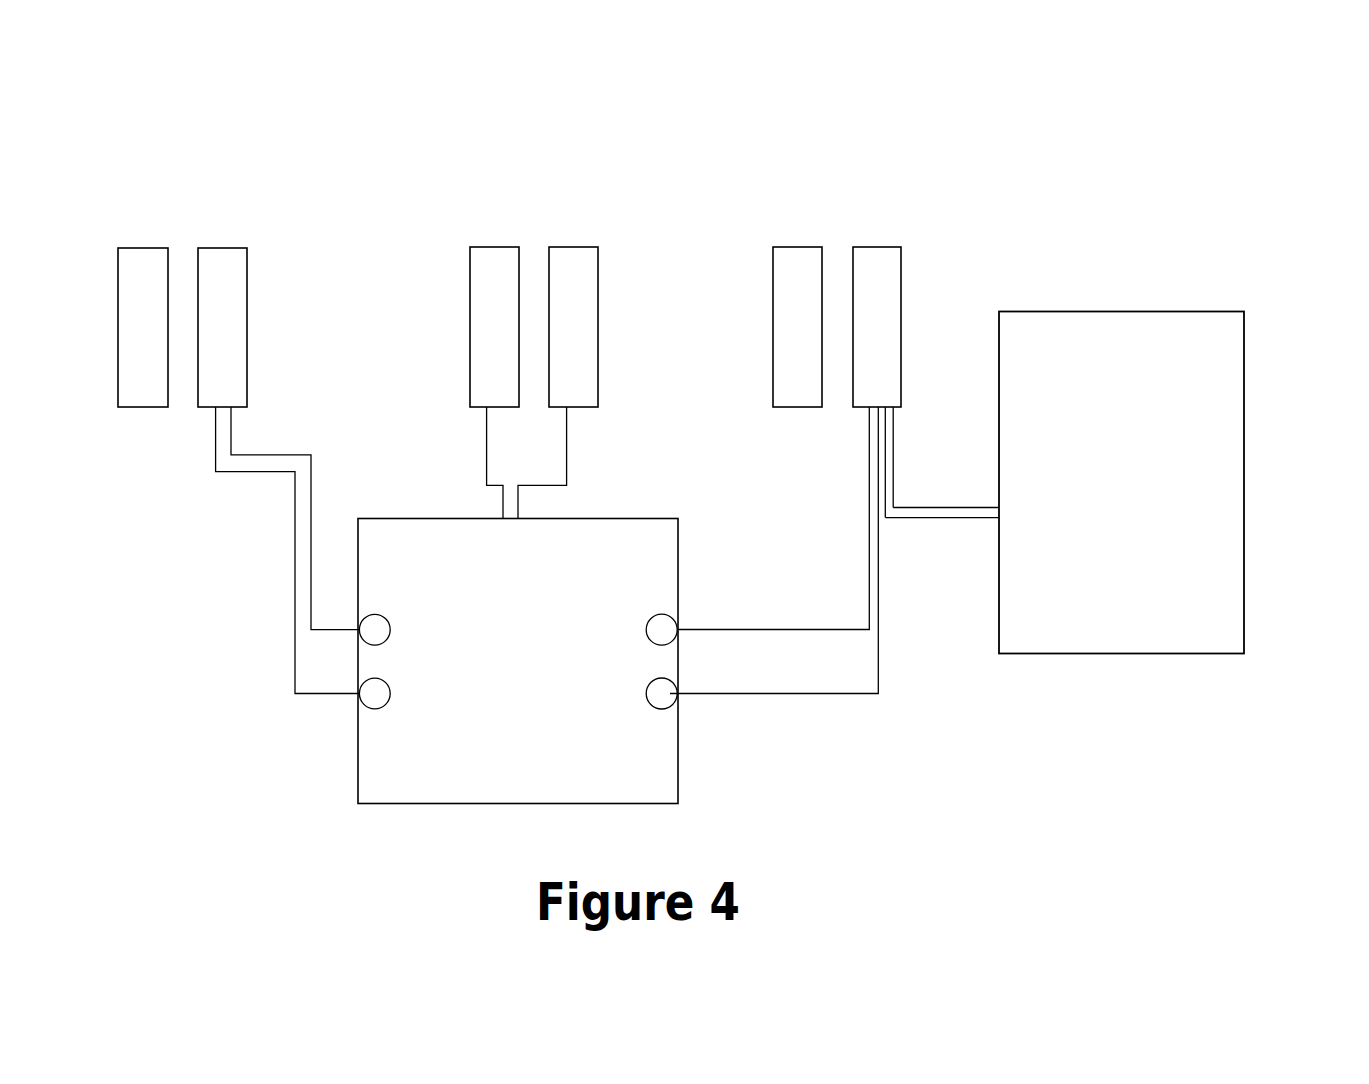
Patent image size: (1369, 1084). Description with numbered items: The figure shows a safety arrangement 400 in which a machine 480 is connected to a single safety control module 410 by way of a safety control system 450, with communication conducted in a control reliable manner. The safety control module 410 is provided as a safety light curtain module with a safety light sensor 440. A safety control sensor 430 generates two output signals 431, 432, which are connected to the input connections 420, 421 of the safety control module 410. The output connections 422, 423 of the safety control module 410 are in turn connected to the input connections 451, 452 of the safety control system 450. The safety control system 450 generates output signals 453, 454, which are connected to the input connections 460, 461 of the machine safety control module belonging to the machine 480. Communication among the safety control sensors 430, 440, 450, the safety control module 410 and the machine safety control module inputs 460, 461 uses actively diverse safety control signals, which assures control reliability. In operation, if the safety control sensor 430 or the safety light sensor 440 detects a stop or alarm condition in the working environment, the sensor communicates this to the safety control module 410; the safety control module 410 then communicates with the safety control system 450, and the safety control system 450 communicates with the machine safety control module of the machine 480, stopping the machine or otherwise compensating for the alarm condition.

The safety control system 400 is at (1028, 124).
The safety control module 410 is at (462, 715).
The input connection 420 is at (407, 695).
The input connection 421 is at (407, 630).
The output connection 422 is at (631, 695).
The output connection 423 is at (631, 630).
The safety control sensor 430 is at (153, 258).
The output signal 431 is at (212, 550).
The output signal 432 is at (308, 518).
The safety light sensor 440 is at (497, 314).
The safety control system 450 is at (814, 258).
The input connection 451 is at (773, 518).
The input connection 452 is at (774, 550).
The output signal 453 is at (930, 457).
The output signal 454 is at (837, 462).
The input connection 460 is at (942, 533).
The input connection 461 is at (946, 496).
The machine 480 is at (1177, 425).